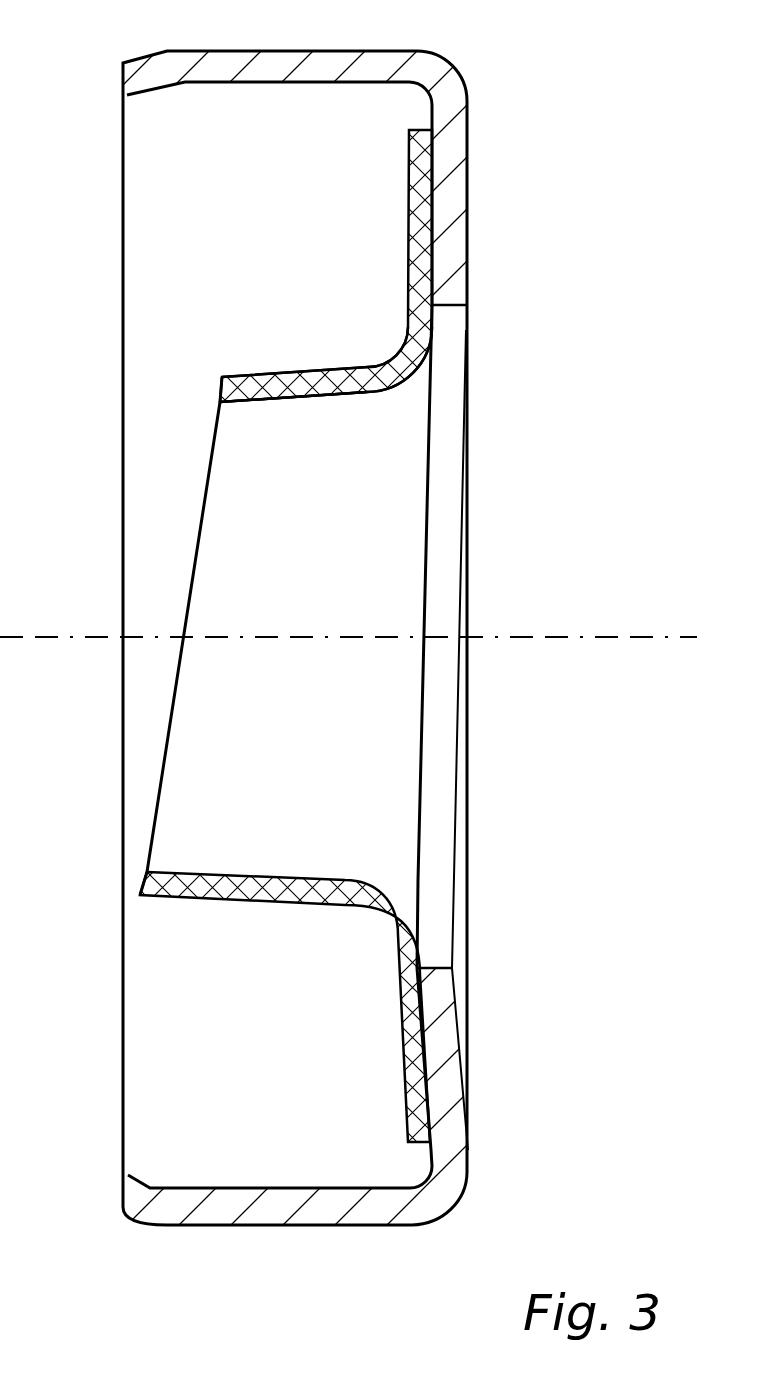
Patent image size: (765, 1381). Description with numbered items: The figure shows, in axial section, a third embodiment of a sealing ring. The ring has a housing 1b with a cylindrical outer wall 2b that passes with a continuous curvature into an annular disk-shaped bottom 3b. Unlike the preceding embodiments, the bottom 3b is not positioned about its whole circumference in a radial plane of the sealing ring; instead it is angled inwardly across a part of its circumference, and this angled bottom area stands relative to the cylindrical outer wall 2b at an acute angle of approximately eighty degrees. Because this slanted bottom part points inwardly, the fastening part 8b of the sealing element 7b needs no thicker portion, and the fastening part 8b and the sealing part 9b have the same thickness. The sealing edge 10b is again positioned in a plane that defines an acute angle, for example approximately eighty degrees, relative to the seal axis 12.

The housing 1b is at (474, 137).
The cylindrical outer wall 2b is at (263, 63).
The annular disk-shaped bottom 3b is at (445, 235).
The sealing element 7b is at (298, 358).
The fastening part 8b is at (405, 957).
The sealing part 9b is at (263, 387).
The sealing edge 10b is at (200, 508).
The seal axis 12 is at (596, 634).